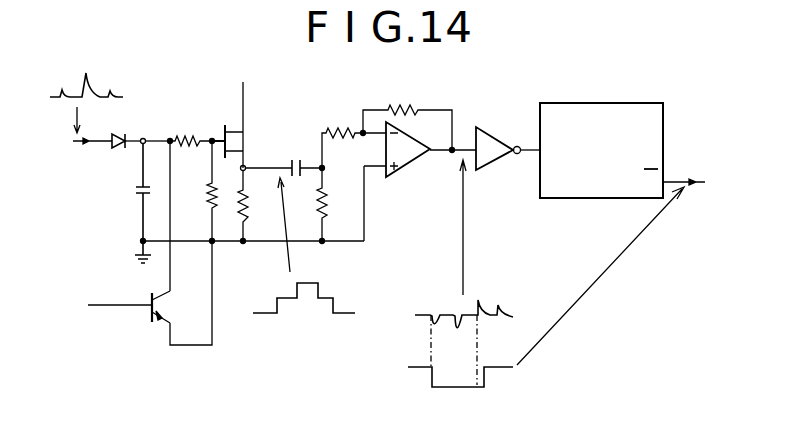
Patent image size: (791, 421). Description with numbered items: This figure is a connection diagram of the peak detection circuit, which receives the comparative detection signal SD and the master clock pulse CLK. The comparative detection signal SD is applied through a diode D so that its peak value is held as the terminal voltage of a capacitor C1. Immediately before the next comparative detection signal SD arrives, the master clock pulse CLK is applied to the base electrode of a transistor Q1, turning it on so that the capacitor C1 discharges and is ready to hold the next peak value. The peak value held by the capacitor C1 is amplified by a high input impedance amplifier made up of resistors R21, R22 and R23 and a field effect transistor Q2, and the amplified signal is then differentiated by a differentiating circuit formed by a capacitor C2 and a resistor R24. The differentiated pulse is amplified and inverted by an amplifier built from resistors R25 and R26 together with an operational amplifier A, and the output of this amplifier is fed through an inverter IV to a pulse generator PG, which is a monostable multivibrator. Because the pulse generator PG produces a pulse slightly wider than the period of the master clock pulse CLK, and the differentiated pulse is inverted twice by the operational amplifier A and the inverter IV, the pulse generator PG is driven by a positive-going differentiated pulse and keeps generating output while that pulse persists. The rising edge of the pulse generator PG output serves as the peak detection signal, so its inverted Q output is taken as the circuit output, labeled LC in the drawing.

The comparative detection signal SD is at (81, 141).
The diode D is at (126, 126).
The capacitor C1 is at (134, 192).
The resistor R21 is at (191, 123).
The resistor R22 is at (196, 191).
The field effect transistor Q2 is at (239, 126).
The resistor R23 is at (258, 205).
The capacitor C2 is at (283, 152).
The resistor R24 is at (337, 204).
The resistor R25 is at (354, 131).
The resistor R26 is at (407, 112).
The operational amplifier A is at (407, 163).
The inverter IV is at (487, 167).
The pulse generator PG is at (605, 103).
The lock signal output LC is at (696, 183).
The transistor Q1 is at (182, 243).
The master clock pulse CLK is at (103, 305).